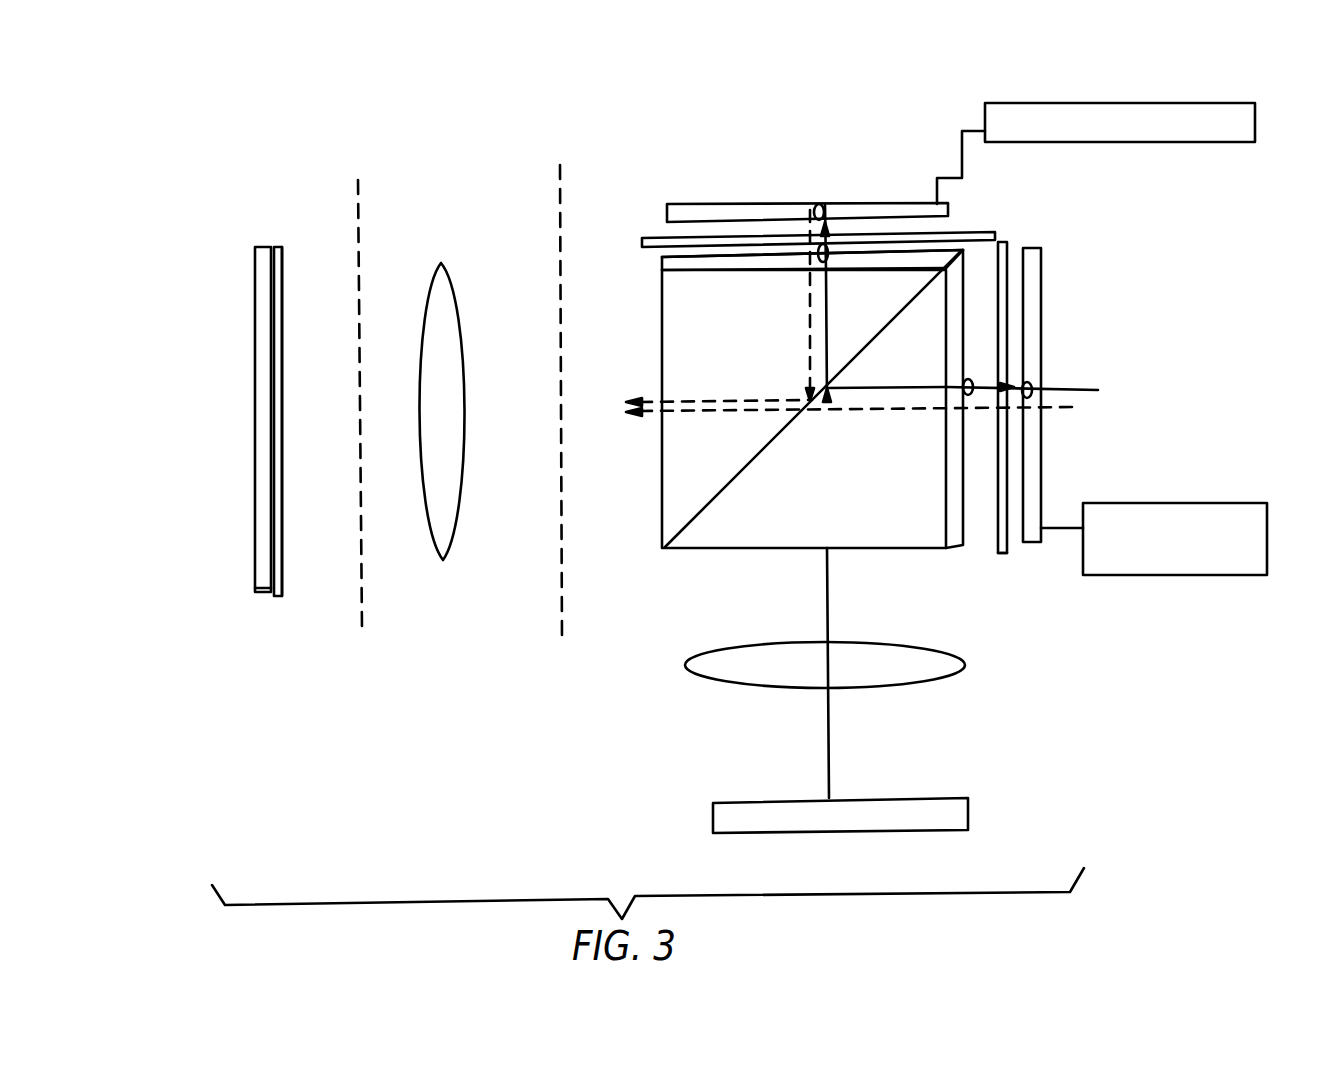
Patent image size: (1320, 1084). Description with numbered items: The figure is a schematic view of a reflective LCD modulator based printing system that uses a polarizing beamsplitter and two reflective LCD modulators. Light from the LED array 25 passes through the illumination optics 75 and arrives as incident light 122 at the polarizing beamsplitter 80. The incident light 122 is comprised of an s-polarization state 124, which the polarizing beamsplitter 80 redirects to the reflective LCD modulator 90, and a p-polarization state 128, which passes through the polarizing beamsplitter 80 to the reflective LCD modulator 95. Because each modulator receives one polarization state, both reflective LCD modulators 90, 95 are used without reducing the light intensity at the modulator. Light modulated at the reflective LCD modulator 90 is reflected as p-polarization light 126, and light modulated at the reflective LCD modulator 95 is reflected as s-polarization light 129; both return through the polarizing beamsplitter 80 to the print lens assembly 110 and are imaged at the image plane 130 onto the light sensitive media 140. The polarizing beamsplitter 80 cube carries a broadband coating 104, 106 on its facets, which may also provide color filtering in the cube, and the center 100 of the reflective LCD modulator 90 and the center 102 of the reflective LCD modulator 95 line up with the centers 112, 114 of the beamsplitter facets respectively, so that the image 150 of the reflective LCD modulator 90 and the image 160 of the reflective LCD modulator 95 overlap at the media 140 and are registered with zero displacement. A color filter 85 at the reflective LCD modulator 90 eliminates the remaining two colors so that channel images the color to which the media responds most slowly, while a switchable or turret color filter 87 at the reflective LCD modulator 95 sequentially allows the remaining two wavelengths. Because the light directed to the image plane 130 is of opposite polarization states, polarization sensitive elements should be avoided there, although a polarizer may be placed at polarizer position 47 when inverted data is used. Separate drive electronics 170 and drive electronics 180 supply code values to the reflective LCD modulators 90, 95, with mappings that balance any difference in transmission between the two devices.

The LED array 25 is at (970, 812).
The polarizer position 47 is at (358, 257).
The illumination optics 75 is at (955, 655).
The polarizing beamsplitter 80 is at (963, 250).
The color filter 85 is at (1005, 553).
The color filter 87 is at (648, 237).
The reflective LCD modulator 90 is at (1041, 345).
The reflective LCD modulator 95 is at (860, 203).
The center of reflective LCD modulator 90 100 is at (1047, 390).
The center of reflective LCD modulator 95 102 is at (815, 208).
The color filter 104 is at (963, 463).
The color filter 106 is at (707, 257).
The print lens assembly 110 is at (445, 560).
The center of beamsplitter element facet 104 112 is at (968, 380).
The center of beamsplitter element facet 106 114 is at (828, 252).
The incident light 122 is at (830, 595).
The s-polarization state 124 is at (885, 385).
The reflected p-polarization light 126 is at (742, 425).
The p-polarization state 128 is at (830, 332).
The reflected s-polarization light 129 is at (808, 318).
The image plane 130 is at (305, 434).
The light sensitive media 140 is at (287, 622).
The image of reflective LCD modulator 90 150 is at (283, 553).
The image of reflective LCD modulator 95 160 is at (282, 300).
The drive electronics 170 is at (1160, 143).
The drive electronics 180 is at (1183, 575).